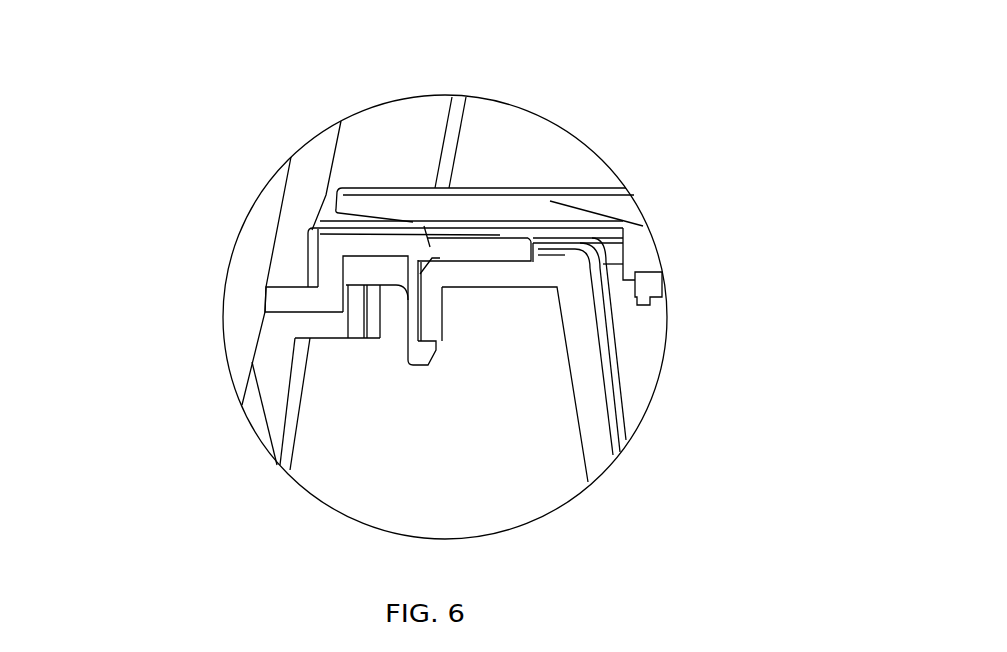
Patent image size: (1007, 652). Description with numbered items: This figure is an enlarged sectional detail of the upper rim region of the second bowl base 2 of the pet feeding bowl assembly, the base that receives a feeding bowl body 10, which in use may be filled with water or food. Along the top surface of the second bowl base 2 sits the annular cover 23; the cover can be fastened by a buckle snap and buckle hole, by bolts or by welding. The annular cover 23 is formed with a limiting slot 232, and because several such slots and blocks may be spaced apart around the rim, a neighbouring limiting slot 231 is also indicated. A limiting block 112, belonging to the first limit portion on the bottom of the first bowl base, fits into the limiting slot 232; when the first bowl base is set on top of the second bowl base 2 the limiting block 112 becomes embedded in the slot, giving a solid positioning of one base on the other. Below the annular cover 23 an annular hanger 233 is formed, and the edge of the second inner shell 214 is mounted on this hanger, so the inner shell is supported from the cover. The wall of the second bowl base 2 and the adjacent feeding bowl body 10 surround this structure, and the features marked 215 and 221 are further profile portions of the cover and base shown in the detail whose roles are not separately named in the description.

The second bowl base 2 is at (317, 304).
The feeding bowl body 10 is at (672, 358).
The annular cover 23 is at (483, 178).
The limiting block 112 is at (224, 302).
The second inner shell 214 is at (268, 338).
The protrusion 215 is at (520, 245).
The hook 221 is at (624, 186).
The limiting slot 231 is at (394, 179).
The limiting slot 232 is at (366, 234).
The annular hanger 233 is at (353, 438).